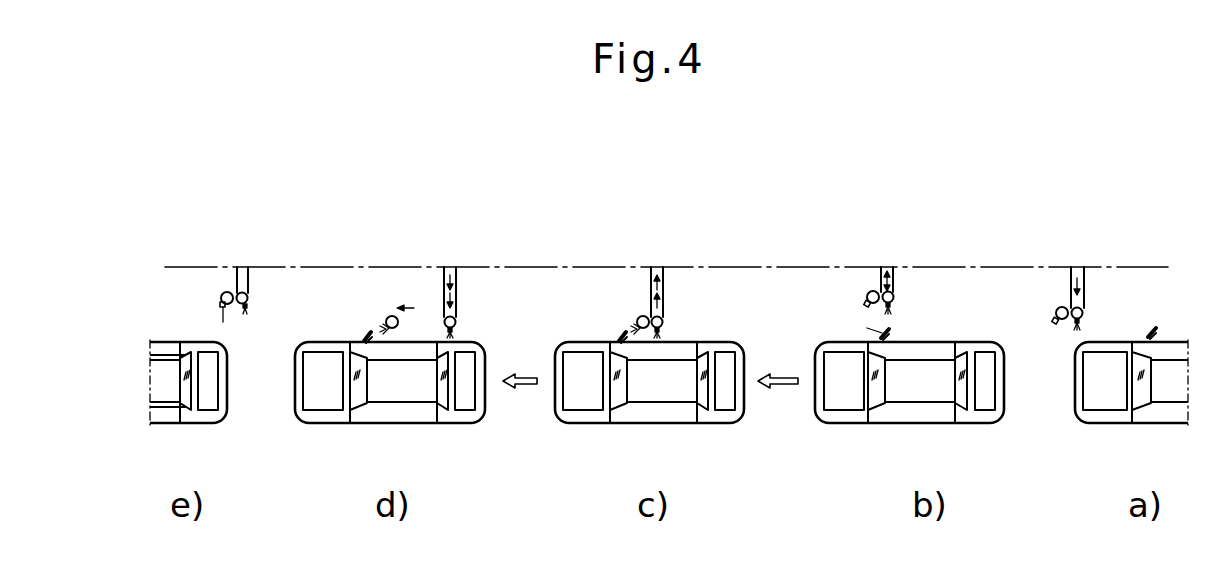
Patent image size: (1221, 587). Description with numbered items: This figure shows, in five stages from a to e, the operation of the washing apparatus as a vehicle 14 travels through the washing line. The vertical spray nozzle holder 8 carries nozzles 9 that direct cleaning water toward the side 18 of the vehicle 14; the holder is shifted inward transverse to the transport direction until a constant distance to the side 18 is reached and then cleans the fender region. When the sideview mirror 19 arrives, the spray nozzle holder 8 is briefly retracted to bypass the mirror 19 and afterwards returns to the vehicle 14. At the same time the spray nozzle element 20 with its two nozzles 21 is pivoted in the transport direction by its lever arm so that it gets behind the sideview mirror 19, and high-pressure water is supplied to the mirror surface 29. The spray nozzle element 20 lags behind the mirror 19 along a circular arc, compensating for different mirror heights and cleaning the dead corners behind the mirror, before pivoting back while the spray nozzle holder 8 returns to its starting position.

The spray nozzle holder 8 is at (243, 293).
The nozzles 9 is at (245, 310).
The vehicle 14 is at (215, 415).
The side 18 is at (168, 347).
The sideview mirror 19 is at (365, 332).
The spray nozzle element 20 is at (228, 293).
The nozzles 21 is at (223, 322).
The mirror surface 29 is at (371, 339).